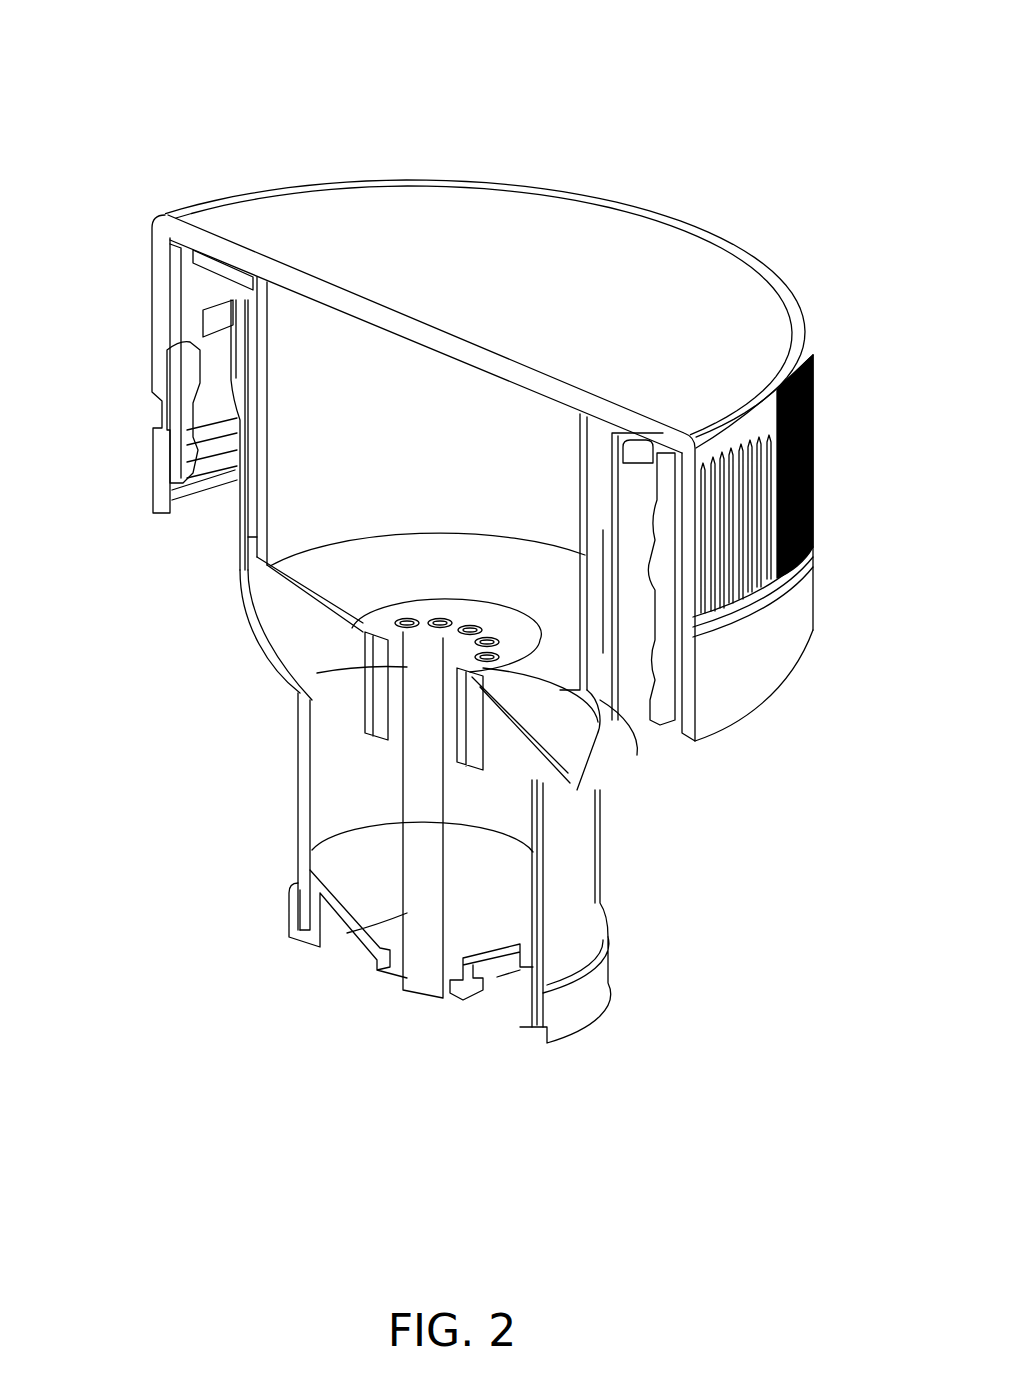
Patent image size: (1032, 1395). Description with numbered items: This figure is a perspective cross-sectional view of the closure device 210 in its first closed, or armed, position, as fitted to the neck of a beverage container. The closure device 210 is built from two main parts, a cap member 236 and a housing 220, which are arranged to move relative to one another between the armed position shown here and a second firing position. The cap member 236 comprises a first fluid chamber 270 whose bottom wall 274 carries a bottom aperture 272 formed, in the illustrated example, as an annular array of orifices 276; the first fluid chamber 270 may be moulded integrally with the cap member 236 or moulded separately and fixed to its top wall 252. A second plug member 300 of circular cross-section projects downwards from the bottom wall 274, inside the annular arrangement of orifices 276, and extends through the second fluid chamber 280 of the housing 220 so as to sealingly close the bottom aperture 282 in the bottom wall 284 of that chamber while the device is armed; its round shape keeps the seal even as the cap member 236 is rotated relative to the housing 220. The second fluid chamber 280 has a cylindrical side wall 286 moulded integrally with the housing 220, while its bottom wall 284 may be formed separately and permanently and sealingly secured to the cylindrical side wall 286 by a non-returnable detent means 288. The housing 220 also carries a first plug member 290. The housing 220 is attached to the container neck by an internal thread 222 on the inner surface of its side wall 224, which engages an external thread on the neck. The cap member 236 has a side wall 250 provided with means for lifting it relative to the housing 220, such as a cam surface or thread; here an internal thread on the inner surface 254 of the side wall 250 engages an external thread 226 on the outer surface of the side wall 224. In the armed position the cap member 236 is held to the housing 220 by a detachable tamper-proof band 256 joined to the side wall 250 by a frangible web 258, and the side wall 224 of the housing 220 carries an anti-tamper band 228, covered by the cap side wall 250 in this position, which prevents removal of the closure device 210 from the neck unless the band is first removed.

The closure device 210 is at (757, 98).
The housing 220 is at (637, 753).
The internal thread 222 is at (200, 347).
The side wall 224 is at (663, 543).
The external thread 226 is at (678, 607).
The anti-tamper band 228 is at (200, 483).
The cap member 236 is at (530, 200).
The side wall 250 is at (717, 607).
The top wall 252 is at (345, 292).
The inner surface 254 is at (172, 245).
The tamper-proof band 256 is at (150, 493).
The frangible web 258 is at (160, 427).
The first fluid chamber 270 is at (265, 323).
The bottom aperture 272 is at (432, 580).
The bottom wall 274 is at (277, 580).
The orifices 276 is at (498, 655).
The second fluid chamber 280 is at (585, 860).
The bottom aperture 282 is at (414, 992).
The bottom wall 284 is at (493, 987).
The cylindrical side wall 286 is at (597, 910).
The non-returnable detent means 288 is at (587, 973).
The first plug member 290 is at (373, 712).
The second plug member 300 is at (413, 827).